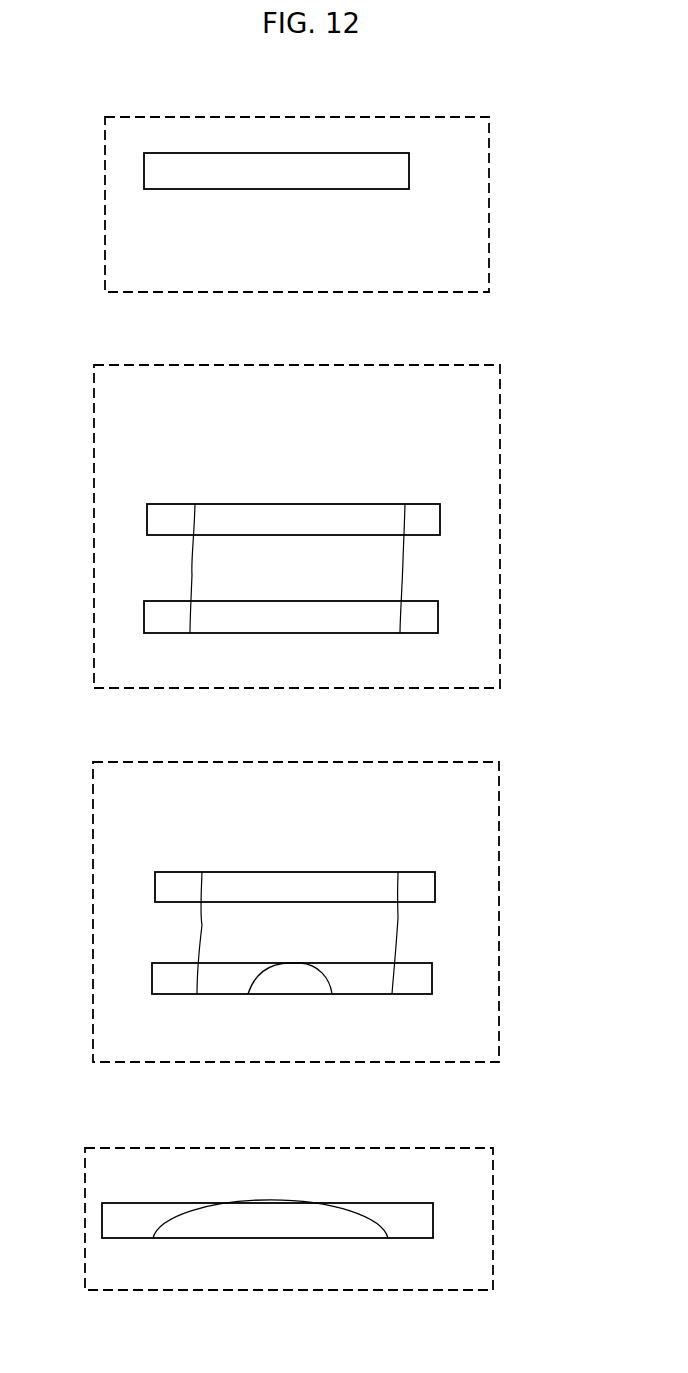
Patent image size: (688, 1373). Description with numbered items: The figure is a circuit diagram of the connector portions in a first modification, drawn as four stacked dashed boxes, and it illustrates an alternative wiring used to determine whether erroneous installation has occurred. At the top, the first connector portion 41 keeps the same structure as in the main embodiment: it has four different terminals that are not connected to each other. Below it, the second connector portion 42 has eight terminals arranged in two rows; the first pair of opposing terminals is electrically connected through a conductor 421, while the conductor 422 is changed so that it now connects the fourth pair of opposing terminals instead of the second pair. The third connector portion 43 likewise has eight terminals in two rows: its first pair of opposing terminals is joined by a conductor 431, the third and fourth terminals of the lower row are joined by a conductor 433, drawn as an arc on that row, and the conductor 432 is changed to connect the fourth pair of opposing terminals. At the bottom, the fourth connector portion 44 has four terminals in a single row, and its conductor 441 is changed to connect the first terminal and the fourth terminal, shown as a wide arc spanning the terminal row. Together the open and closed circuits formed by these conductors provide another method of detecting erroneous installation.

The first connector portion 41 is at (467, 265).
The second connector portion 42 is at (306, 526).
The conductor 421 is at (192, 575).
The conductor 422 is at (403, 561).
The third connector portion 43 is at (302, 936).
The conductor 431 is at (202, 925).
The conductor 432 is at (398, 918).
The conductor 433 is at (253, 983).
The fourth connector portion 44 is at (332, 1225).
The conductor 441 is at (373, 1220).